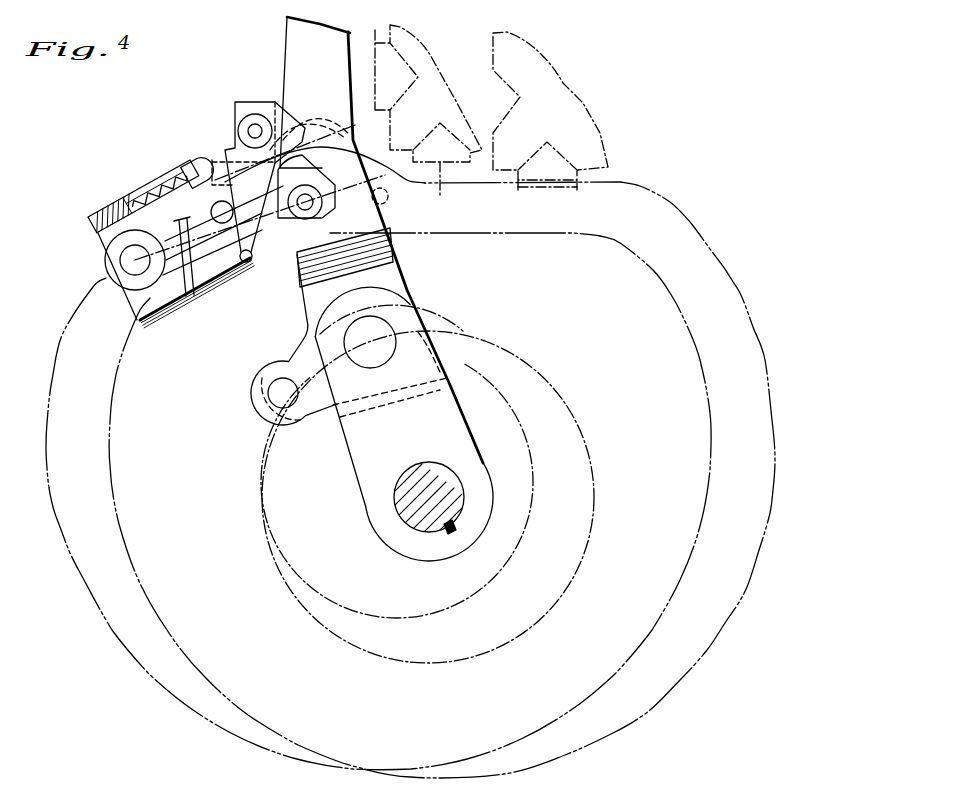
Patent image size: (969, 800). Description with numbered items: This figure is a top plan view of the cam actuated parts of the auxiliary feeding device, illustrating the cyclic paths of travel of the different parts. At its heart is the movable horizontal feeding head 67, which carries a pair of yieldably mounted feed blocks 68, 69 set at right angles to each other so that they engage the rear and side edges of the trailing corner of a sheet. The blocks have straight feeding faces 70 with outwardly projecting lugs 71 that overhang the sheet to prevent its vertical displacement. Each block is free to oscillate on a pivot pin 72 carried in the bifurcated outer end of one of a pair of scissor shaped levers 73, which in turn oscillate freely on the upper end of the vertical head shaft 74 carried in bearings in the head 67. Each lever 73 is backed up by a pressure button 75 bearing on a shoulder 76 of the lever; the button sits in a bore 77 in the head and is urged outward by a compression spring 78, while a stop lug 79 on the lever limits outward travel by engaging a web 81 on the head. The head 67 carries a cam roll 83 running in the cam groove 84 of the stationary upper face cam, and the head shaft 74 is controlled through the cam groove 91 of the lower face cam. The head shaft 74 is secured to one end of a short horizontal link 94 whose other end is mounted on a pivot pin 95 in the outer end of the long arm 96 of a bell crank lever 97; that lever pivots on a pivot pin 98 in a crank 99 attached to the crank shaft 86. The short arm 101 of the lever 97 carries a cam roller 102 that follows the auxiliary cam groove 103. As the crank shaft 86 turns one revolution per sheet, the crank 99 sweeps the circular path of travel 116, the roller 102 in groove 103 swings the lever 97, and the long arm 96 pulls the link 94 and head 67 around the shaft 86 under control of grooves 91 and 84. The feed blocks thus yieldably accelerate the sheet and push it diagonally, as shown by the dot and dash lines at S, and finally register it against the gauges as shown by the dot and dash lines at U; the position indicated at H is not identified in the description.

The hammer H is at (320, 38).
The dot and dash line position of sheet S is at (425, 48).
The dot and dash line position of sheet U is at (571, 81).
The feeding head 67 is at (160, 223).
The feed block 68 is at (256, 102).
The feed block 69 is at (550, 190).
The straight feeding faces 70 is at (282, 113).
The outwardly projecting lugs 71 is at (300, 126).
The pivot pins 72 is at (250, 129).
The scissor shaped levers 73 is at (230, 153).
The vertical head shaft 74 is at (216, 252).
The pressure button 75 is at (192, 168).
The shoulder 76 is at (210, 155).
The bore 77 is at (137, 193).
The compression spring 78 is at (121, 197).
The stop lug 79 is at (190, 272).
The web 81 is at (162, 298).
The cam roll 83 is at (108, 261).
The cam groove 84 is at (64, 337).
The crank shaft 86 is at (409, 517).
The cam groove 91 is at (113, 463).
The short horizontal link 94 is at (366, 180).
The pivot pin 95 is at (343, 136).
The long arm 96 is at (387, 272).
The bell crank lever 97 is at (412, 302).
The pivot pin 98 is at (371, 350).
The crank 99 is at (358, 452).
The short arm 101 is at (325, 417).
The cam roller 102 is at (283, 360).
The auxiliary cam groove 103 is at (260, 455).
The circular path of travel 116 is at (580, 396).